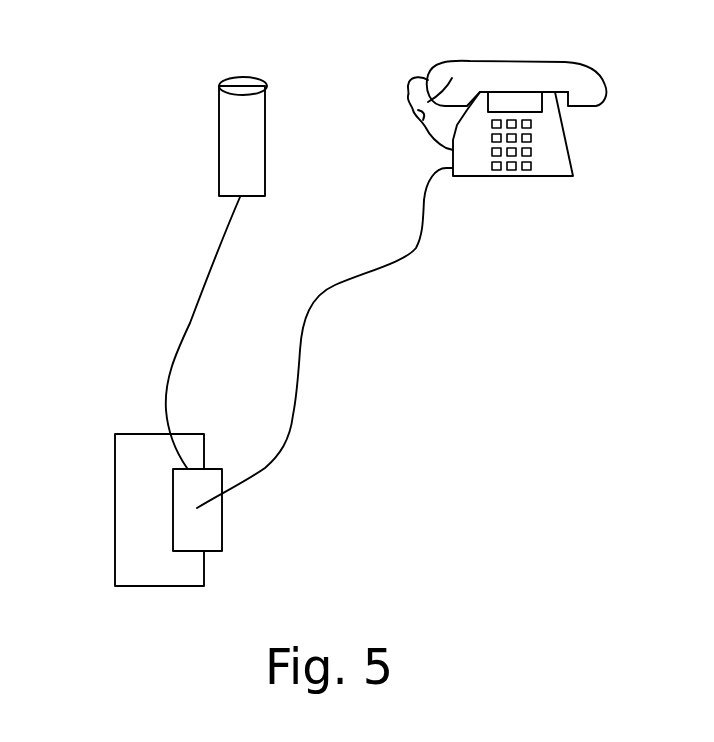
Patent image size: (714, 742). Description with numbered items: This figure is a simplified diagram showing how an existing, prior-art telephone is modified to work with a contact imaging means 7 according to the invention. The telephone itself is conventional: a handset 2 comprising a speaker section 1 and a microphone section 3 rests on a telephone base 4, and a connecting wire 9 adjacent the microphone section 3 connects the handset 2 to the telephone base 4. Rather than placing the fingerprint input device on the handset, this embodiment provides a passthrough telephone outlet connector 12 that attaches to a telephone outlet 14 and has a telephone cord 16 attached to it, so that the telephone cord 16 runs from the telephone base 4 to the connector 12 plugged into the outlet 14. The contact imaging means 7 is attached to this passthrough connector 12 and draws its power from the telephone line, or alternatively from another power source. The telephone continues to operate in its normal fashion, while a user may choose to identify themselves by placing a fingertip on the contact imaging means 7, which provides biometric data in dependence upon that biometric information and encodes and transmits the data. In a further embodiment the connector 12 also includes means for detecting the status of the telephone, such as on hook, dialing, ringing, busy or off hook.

The speaker section 1 is at (540, 118).
The handset 2 is at (530, 70).
The microphone section 3 is at (418, 110).
The telephone base 4 is at (562, 167).
The contact imaging means 7 is at (242, 82).
The connecting wire 9 is at (440, 147).
The passthrough telephone outlet connector 12 is at (213, 532).
The telephone outlet 14 is at (113, 470).
The telephone cord 16 is at (293, 410).